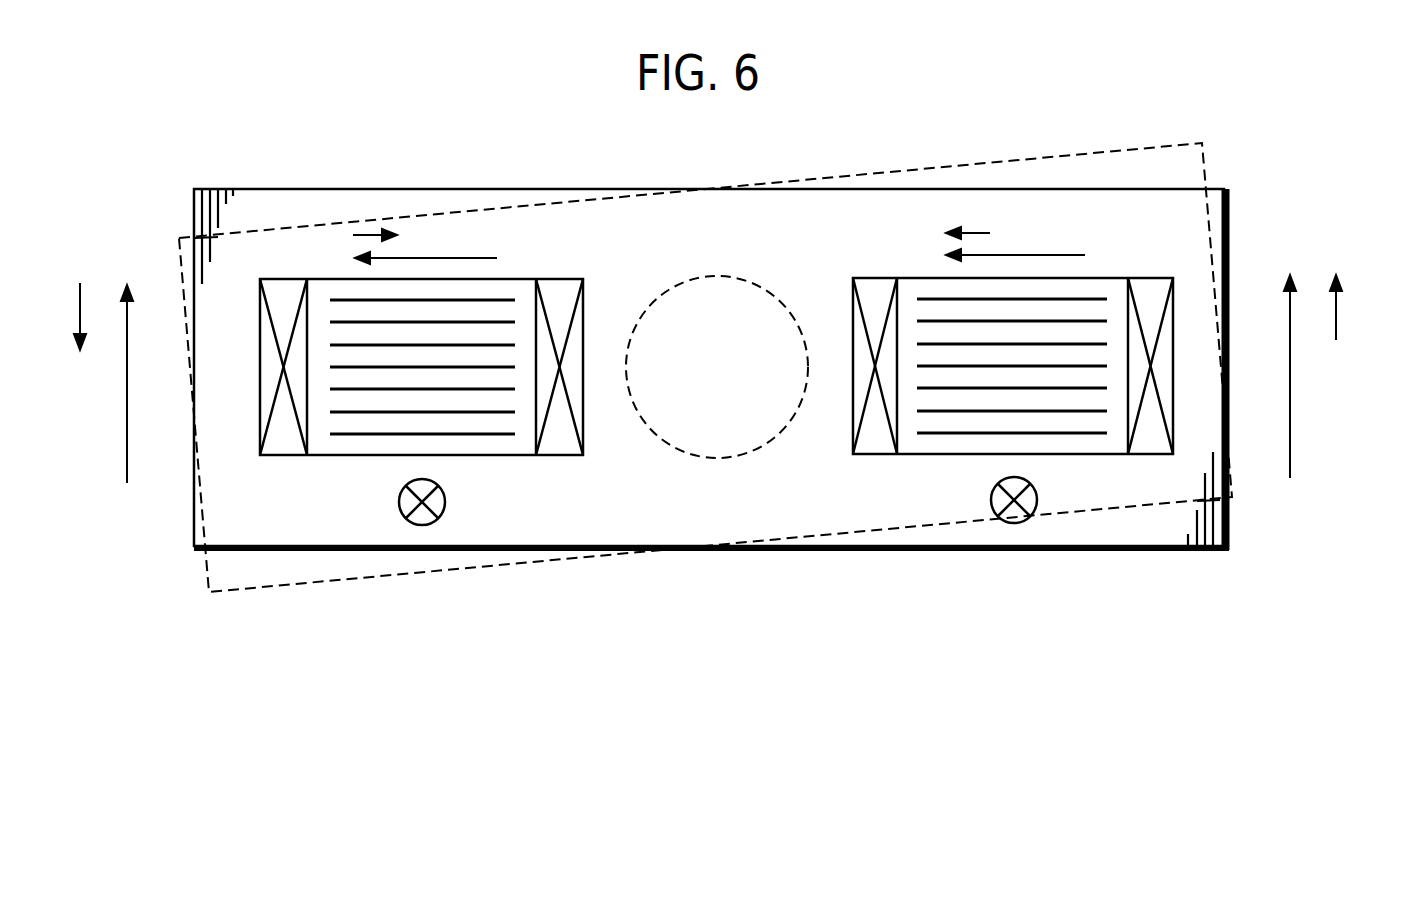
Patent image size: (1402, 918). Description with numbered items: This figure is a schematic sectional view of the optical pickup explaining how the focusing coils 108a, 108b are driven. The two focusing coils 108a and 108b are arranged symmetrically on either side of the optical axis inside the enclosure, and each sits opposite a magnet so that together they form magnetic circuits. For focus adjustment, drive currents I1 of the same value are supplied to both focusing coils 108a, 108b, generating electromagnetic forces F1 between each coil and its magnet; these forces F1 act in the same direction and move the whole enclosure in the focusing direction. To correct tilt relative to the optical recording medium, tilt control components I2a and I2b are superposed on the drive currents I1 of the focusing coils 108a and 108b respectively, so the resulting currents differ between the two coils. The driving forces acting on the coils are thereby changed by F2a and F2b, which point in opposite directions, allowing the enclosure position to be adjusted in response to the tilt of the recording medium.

The focusing coil 108a is at (873, 456).
The focusing coil 108b is at (550, 457).
The drive current I1 is at (732, 257).
The tilt control component I2a is at (990, 230).
The tilt control component I2b is at (348, 232).
The electromagnetic force F1 is at (711, 402).
The driving force change F2a is at (1338, 331).
The driving force change F2b is at (84, 298).